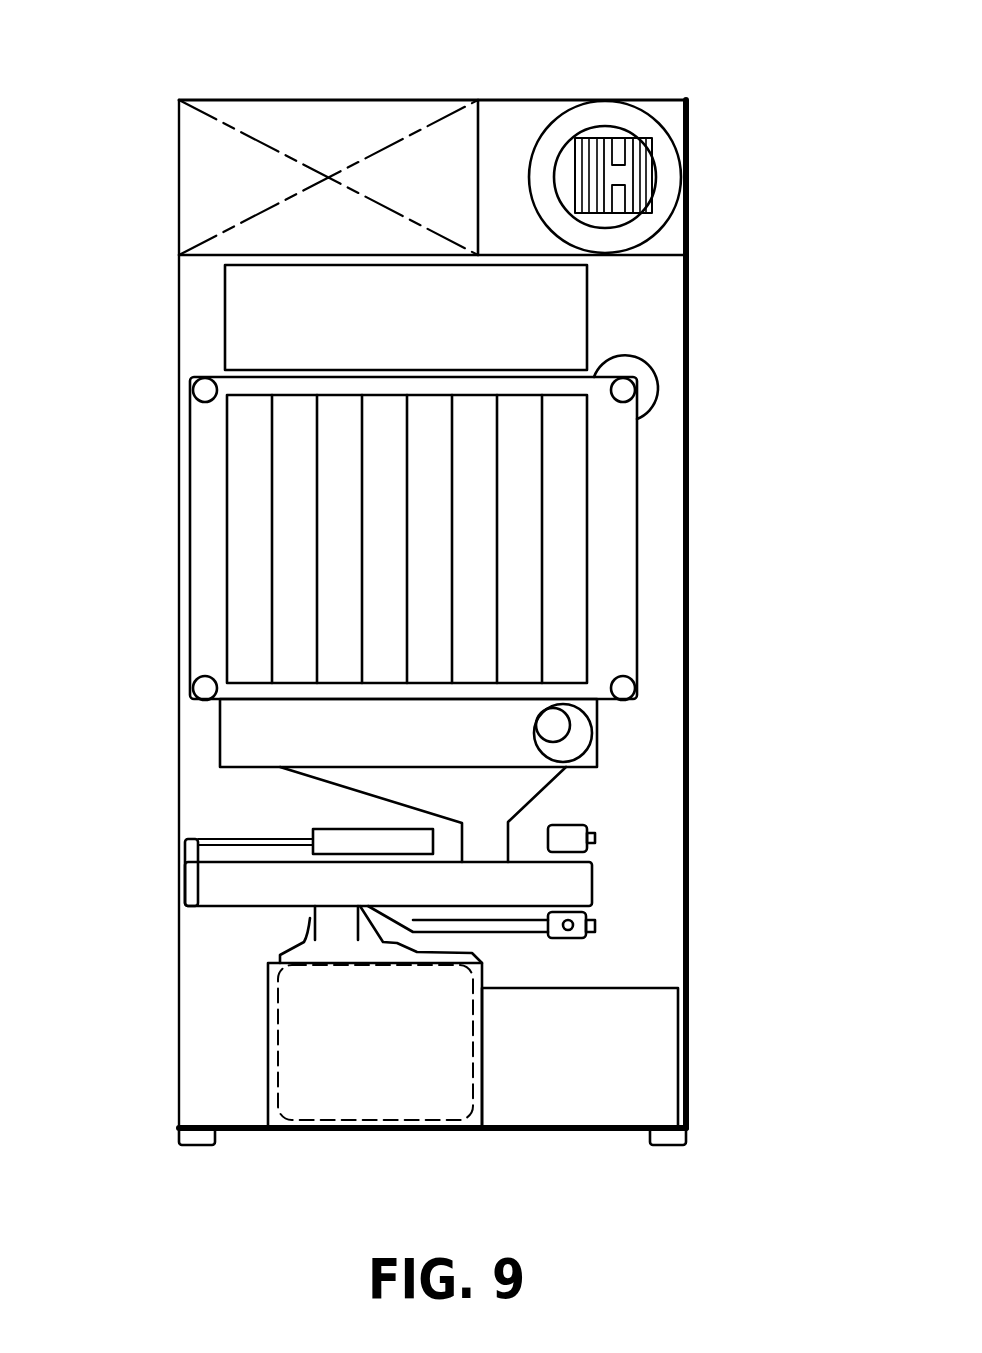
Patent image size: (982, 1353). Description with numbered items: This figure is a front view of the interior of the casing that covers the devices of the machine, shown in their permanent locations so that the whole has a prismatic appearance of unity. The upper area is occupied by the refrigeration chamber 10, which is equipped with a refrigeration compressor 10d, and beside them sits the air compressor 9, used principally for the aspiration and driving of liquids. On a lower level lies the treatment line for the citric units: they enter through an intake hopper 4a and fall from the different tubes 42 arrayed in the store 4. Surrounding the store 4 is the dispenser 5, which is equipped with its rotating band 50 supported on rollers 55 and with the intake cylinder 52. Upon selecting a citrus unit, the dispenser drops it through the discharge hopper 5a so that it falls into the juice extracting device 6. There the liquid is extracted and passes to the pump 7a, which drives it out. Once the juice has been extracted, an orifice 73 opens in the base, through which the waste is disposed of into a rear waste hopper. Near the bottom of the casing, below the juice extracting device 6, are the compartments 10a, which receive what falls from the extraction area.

The refrigeration chamber 10 is at (250, 100).
The refrigeration compressor 10d is at (335, 135).
The air compressor 9 is at (612, 142).
The intake hopper 4a is at (558, 323).
The tubes 42 is at (572, 462).
The store 4 is at (520, 527).
The dispenser 5 is at (608, 608).
The rollers 55 is at (203, 688).
The rotating band 50 is at (637, 658).
The intake cylinder 52 is at (672, 749).
The discharge hopper 5a is at (398, 790).
The juice extracting device 6 is at (557, 880).
The pump 7a is at (587, 917).
The lower containers 10a is at (313, 1057).
The orifice 73 is at (333, 932).